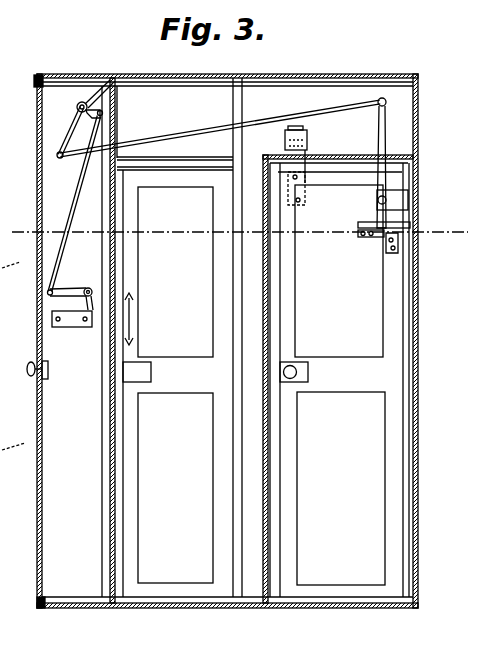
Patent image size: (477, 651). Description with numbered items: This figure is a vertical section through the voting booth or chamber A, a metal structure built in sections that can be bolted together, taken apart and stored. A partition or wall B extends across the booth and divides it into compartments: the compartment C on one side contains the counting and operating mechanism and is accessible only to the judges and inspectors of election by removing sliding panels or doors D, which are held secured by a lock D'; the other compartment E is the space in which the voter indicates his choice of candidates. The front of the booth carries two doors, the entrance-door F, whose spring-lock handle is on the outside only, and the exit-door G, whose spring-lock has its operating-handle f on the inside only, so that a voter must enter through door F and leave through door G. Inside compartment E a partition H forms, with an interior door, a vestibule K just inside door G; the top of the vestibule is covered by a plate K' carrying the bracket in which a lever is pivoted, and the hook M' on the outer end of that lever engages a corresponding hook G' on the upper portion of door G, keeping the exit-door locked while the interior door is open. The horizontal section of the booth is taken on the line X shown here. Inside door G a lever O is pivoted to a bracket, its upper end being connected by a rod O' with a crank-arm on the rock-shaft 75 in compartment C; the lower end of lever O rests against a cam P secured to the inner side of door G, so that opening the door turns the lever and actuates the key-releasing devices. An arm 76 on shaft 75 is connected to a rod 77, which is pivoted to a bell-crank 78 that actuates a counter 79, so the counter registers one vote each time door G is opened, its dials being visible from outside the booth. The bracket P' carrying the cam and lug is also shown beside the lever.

The booth or chamber A is at (240, 606).
The partition or wall B is at (110, 490).
The compartment C is at (83, 341).
The sliding panels or doors D is at (21, 356).
The lock D' is at (48, 371).
The compartment E is at (168, 383).
The entrance-door F is at (168, 472).
The exit-door G is at (341, 488).
The hook G' is at (306, 172).
The partition H is at (264, 311).
The vestibule K is at (356, 380).
The plate K' is at (338, 370).
The hook M' is at (305, 135).
The lever O is at (381, 167).
The rod O' is at (221, 128).
The cam P is at (370, 245).
The bracket plate P' is at (397, 237).
The section line X is at (235, 232).
The operating-handle f is at (297, 373).
The rock-shaft 75 is at (77, 106).
The arm 76 is at (90, 104).
The rod 77 is at (81, 180).
The bell-crank 78 is at (71, 290).
The counter 79 is at (80, 326).